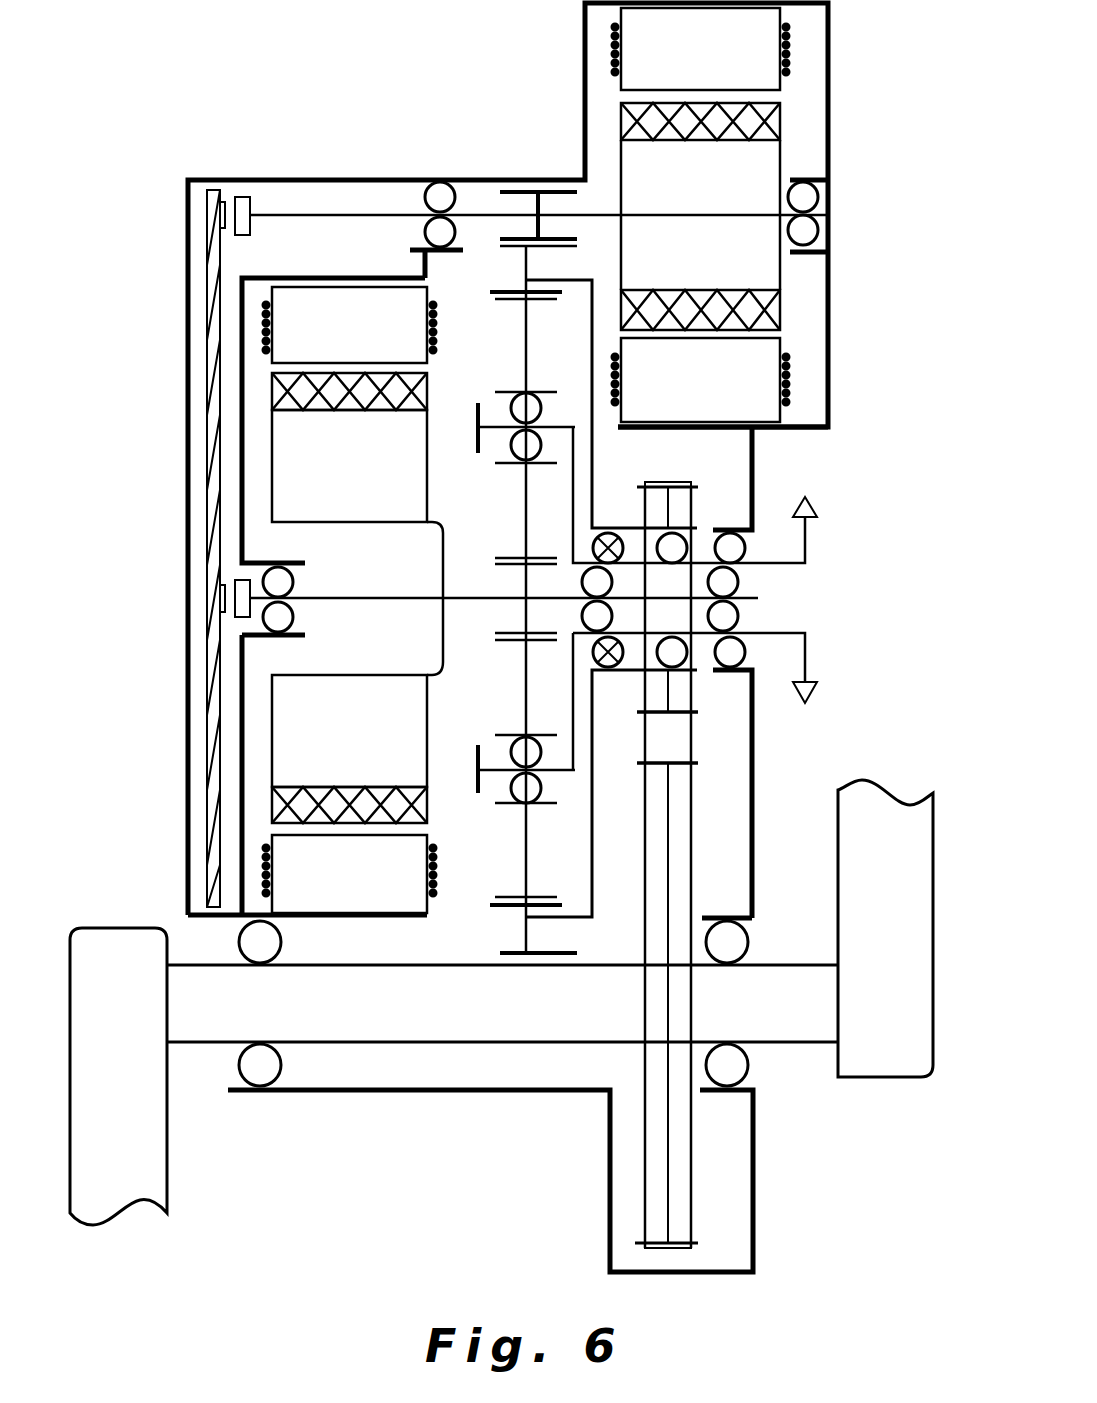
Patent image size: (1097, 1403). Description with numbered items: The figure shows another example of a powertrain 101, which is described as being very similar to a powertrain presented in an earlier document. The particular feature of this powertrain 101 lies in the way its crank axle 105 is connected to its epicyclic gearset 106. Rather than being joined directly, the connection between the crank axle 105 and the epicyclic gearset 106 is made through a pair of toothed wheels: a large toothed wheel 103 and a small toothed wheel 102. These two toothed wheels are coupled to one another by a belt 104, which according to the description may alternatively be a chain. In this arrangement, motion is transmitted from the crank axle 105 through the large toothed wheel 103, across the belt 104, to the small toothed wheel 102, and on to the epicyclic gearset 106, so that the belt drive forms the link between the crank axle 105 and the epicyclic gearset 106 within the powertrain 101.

The powertrain 101 is at (843, 122).
The small toothed wheel 102 is at (668, 502).
The large toothed wheel 103 is at (670, 855).
The belt 104 is at (692, 800).
The crank axle 105 is at (777, 1008).
The epicyclic gearset 106 is at (593, 470).